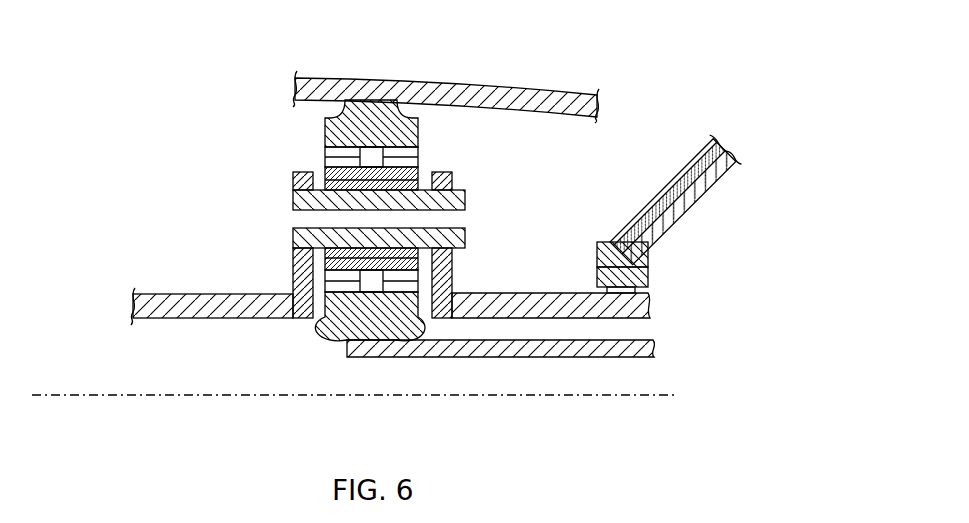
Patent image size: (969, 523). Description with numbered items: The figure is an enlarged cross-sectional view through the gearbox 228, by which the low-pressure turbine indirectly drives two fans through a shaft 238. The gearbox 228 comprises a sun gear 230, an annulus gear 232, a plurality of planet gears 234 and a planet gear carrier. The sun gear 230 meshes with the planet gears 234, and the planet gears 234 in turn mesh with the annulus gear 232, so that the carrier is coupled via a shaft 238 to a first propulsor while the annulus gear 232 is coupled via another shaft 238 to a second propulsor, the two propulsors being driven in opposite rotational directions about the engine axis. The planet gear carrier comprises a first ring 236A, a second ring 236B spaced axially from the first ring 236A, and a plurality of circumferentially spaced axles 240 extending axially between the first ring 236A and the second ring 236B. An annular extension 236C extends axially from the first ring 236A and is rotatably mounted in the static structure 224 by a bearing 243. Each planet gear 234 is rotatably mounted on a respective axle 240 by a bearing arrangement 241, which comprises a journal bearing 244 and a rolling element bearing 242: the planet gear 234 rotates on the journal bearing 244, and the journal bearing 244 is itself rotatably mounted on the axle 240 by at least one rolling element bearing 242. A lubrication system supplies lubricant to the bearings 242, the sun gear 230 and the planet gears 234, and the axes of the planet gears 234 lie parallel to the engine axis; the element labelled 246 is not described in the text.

The static structure 224 is at (700, 195).
The gearbox 228 is at (230, 361).
The sun gear 230 is at (324, 318).
The annulus gear 232 is at (325, 131).
The planet gear 234 is at (418, 153).
The first ring 236A is at (453, 278).
The second ring 236B is at (293, 280).
The annular extension 236C is at (553, 293).
The shaft 238 is at (403, 78).
The axle 240 is at (293, 197).
The bearing arrangement 241 is at (452, 226).
The rolling element bearing 242 is at (297, 230).
The bearing 243 is at (648, 270).
The journal bearing 244 is at (393, 330).
The base plate 246 is at (547, 347).